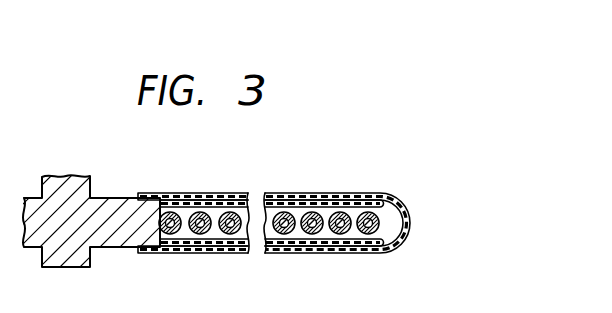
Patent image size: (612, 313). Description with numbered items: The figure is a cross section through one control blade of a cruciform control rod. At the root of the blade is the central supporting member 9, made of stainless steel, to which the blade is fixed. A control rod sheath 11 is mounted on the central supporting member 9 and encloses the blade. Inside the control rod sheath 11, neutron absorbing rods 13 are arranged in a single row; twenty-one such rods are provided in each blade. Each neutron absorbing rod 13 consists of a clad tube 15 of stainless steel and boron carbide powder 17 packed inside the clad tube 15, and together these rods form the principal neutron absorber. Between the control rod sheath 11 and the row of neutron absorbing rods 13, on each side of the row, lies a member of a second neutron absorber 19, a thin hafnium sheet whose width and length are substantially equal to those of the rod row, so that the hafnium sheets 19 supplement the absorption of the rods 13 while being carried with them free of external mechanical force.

The central supporting member 9 is at (63, 258).
The control rod sheath 11 is at (150, 252).
The neutron absorbing rod 13 is at (347, 200).
The clad tube 15 is at (388, 202).
The boron carbide powder 17 is at (367, 243).
The member of the second neutron absorber 19 is at (213, 248).